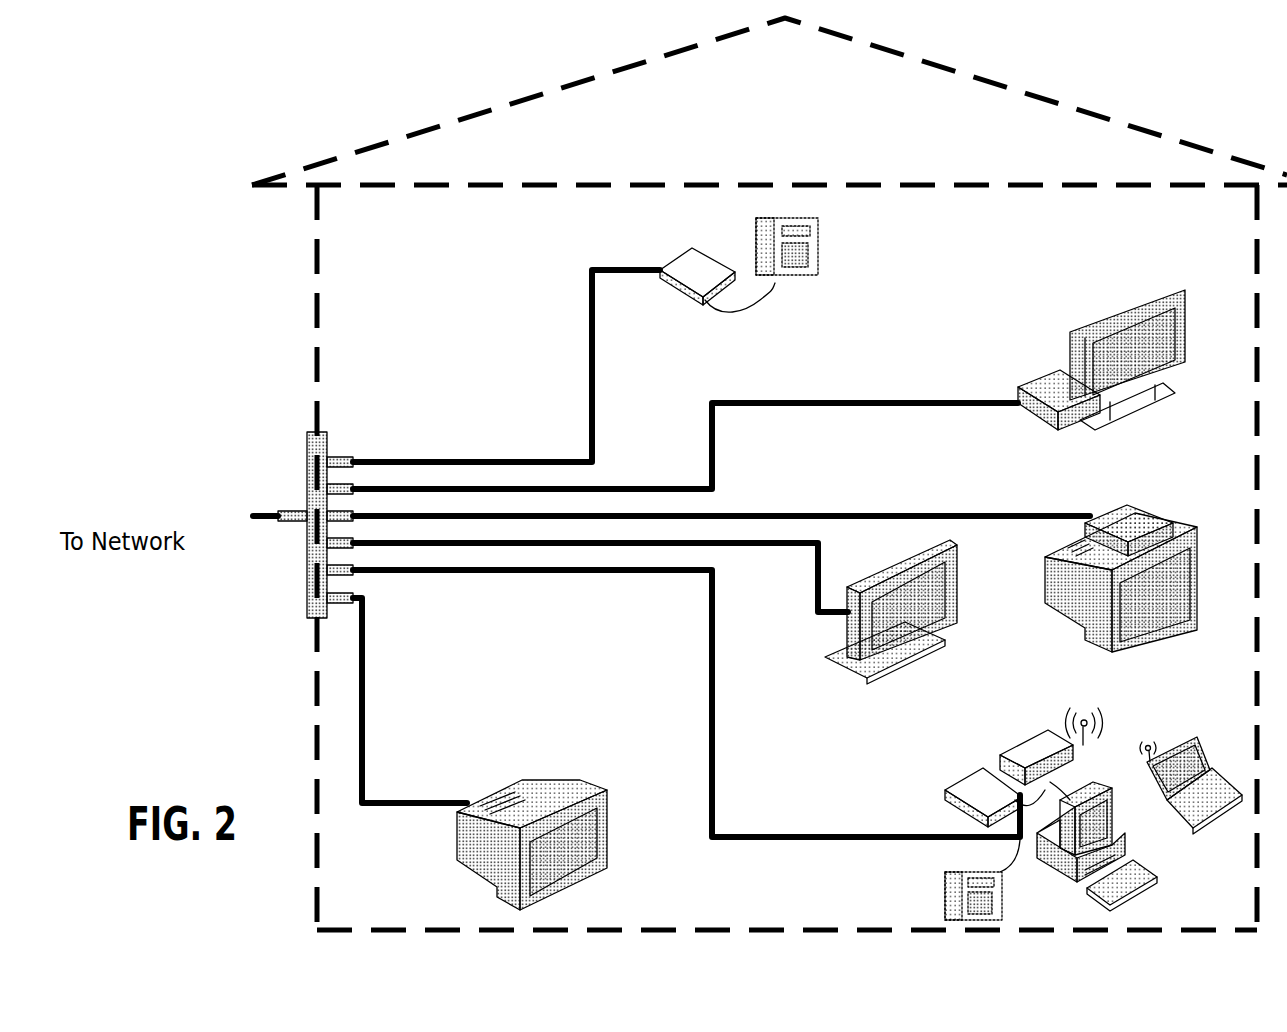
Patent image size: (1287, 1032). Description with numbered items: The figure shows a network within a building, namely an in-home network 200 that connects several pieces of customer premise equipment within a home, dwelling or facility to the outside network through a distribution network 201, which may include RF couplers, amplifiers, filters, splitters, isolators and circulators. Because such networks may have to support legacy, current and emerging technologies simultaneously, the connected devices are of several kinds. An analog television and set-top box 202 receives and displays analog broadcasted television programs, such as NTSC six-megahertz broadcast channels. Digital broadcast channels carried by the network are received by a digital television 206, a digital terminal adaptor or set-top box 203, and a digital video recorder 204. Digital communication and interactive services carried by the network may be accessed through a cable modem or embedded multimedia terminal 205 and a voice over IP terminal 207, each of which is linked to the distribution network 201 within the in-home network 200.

The in-home network 200 is at (290, 140).
The distribution network 201 is at (293, 510).
The analog television and set-top box 202 is at (547, 781).
The digital terminal adaptor/set-top box 203 is at (1046, 374).
The digital video recorder 204 is at (1122, 504).
The cable modem/embedded multimedia terminal 205 is at (973, 773).
The digital television 206 is at (878, 572).
The voice over IP terminal 207 is at (686, 250).